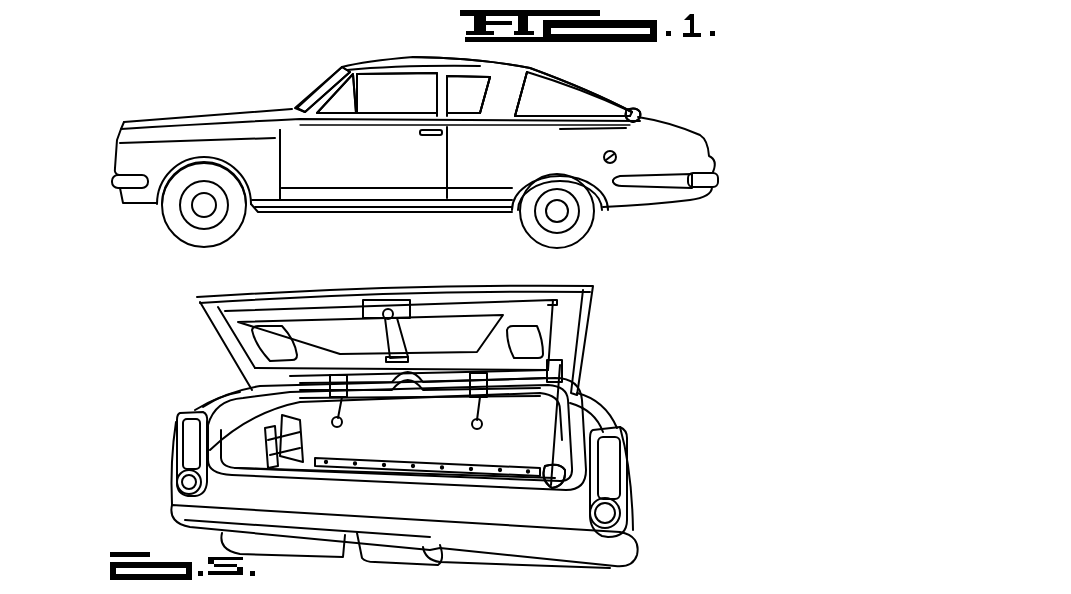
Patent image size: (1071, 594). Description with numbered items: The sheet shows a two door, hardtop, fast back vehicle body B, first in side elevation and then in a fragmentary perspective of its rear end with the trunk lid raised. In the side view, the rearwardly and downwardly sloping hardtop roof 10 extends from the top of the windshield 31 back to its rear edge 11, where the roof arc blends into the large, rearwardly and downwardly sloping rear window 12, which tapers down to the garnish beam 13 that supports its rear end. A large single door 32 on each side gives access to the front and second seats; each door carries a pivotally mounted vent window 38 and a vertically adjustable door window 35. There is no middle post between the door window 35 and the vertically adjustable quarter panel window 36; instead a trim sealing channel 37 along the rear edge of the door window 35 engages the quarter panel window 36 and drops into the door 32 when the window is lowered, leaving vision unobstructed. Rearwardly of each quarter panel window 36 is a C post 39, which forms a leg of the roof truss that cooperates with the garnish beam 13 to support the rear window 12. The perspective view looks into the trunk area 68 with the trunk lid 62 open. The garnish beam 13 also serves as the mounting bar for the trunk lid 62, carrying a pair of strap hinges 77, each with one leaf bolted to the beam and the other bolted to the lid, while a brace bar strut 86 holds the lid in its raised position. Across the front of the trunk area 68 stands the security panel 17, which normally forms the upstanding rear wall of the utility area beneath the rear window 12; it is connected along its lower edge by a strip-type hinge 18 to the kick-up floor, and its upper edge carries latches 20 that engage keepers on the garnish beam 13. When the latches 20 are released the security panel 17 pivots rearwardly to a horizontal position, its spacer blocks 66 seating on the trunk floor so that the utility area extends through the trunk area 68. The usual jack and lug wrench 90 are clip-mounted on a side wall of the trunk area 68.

In FIG. 1, the vehicle body B is at (398, 58).
In FIG. 2, the vehicle body B is at (606, 392).
In FIG. 1, the roof 10 is at (487, 64).
In FIG. 1, the rear edge of the roof 11 is at (527, 72).
In FIG. 1, the rear window 12 is at (582, 93).
In FIG. 1, the garnish beam 13 is at (643, 110).
In FIG. 2, the garnish beam 13 is at (436, 391).
In FIG. 2, the security panel 17 is at (372, 452).
In FIG. 2, the strip-type hinge 18 is at (433, 461).
In FIG. 2, the security panel latches 20 is at (468, 423).
In FIG. 1, the windshield 31 is at (333, 80).
In FIG. 1, the front door 32 is at (390, 162).
In FIG. 1, the door window 35 is at (400, 98).
In FIG. 1, the quarter panel window 36 is at (468, 94).
In FIG. 1, the trim sealing channel 37 is at (438, 78).
In FIG. 1, the vent window 38 is at (339, 102).
In FIG. 1, the C post 39 is at (500, 107).
In FIG. 2, the trunk lid 62 is at (593, 290).
In FIG. 2, the spacer block 66 is at (537, 430).
In FIG. 2, the trunk area 68 is at (238, 452).
In FIG. 2, the strap hinge 77 is at (345, 388).
In FIG. 2, the brace bar strut 86 is at (552, 446).
In FIG. 2, the jack and lug wrench 90 is at (268, 465).